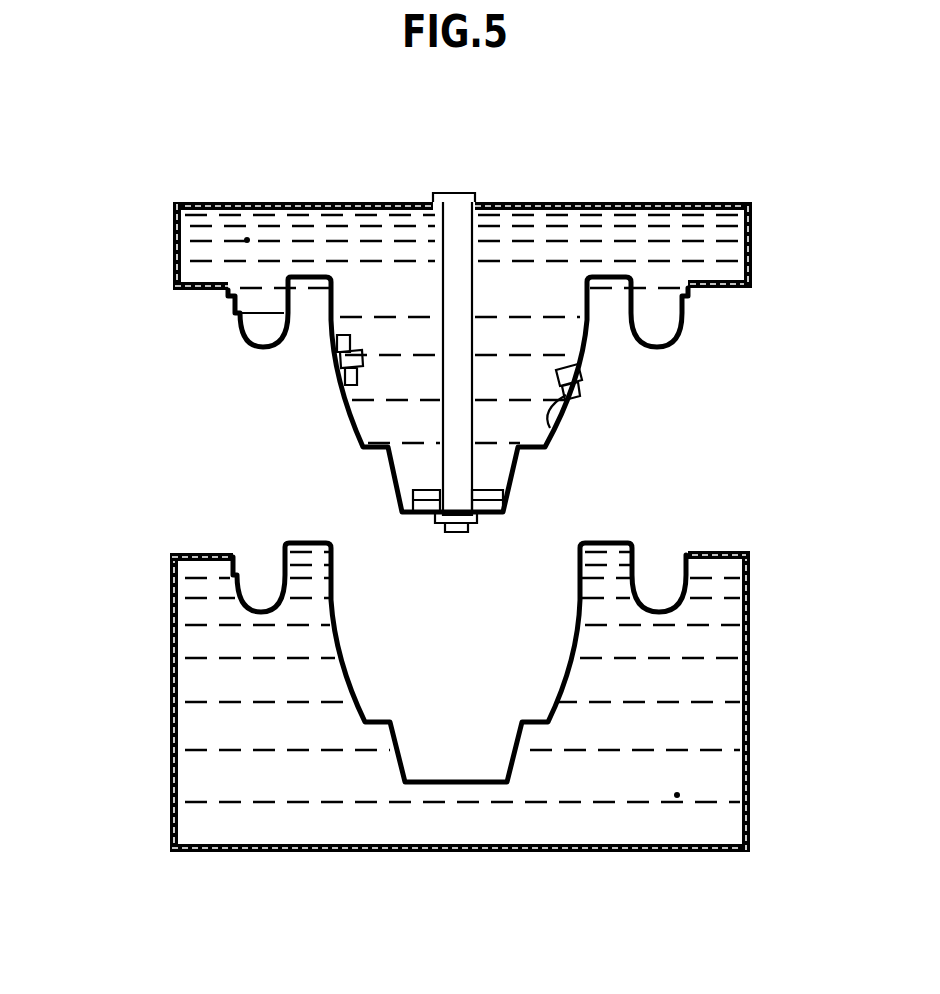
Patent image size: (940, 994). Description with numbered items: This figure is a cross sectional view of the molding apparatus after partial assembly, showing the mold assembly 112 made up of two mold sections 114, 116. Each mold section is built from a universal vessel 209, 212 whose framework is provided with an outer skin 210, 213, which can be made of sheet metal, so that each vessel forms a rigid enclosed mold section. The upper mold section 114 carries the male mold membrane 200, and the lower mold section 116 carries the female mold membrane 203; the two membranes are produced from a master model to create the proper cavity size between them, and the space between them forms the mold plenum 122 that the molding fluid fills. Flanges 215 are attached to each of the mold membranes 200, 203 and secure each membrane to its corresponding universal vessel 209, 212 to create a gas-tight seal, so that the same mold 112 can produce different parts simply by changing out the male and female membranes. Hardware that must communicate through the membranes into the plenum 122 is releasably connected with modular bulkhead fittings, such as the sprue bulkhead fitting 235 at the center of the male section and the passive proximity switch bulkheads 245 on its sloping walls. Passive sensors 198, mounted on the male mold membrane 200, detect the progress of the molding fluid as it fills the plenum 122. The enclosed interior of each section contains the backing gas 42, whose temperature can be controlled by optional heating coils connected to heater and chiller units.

The backing gas 42 is at (247, 240).
The mold assembly 112 is at (808, 447).
The mold section 114 is at (458, 337).
The mold section 116 is at (509, 715).
The mold plenum 122 is at (358, 527).
The passive sensors 198 is at (340, 366).
The male mold membrane 200 is at (340, 410).
The female mold membrane 203 is at (360, 700).
The universal vessel 209 is at (633, 201).
The outer skin 210 is at (752, 278).
The universal vessel 212 is at (565, 846).
The outer skin 213 is at (750, 757).
The flanges 215 is at (708, 283).
The sprue bulkhead fitting 235 is at (508, 497).
The passive proximity switch bulkheads 245 is at (352, 347).